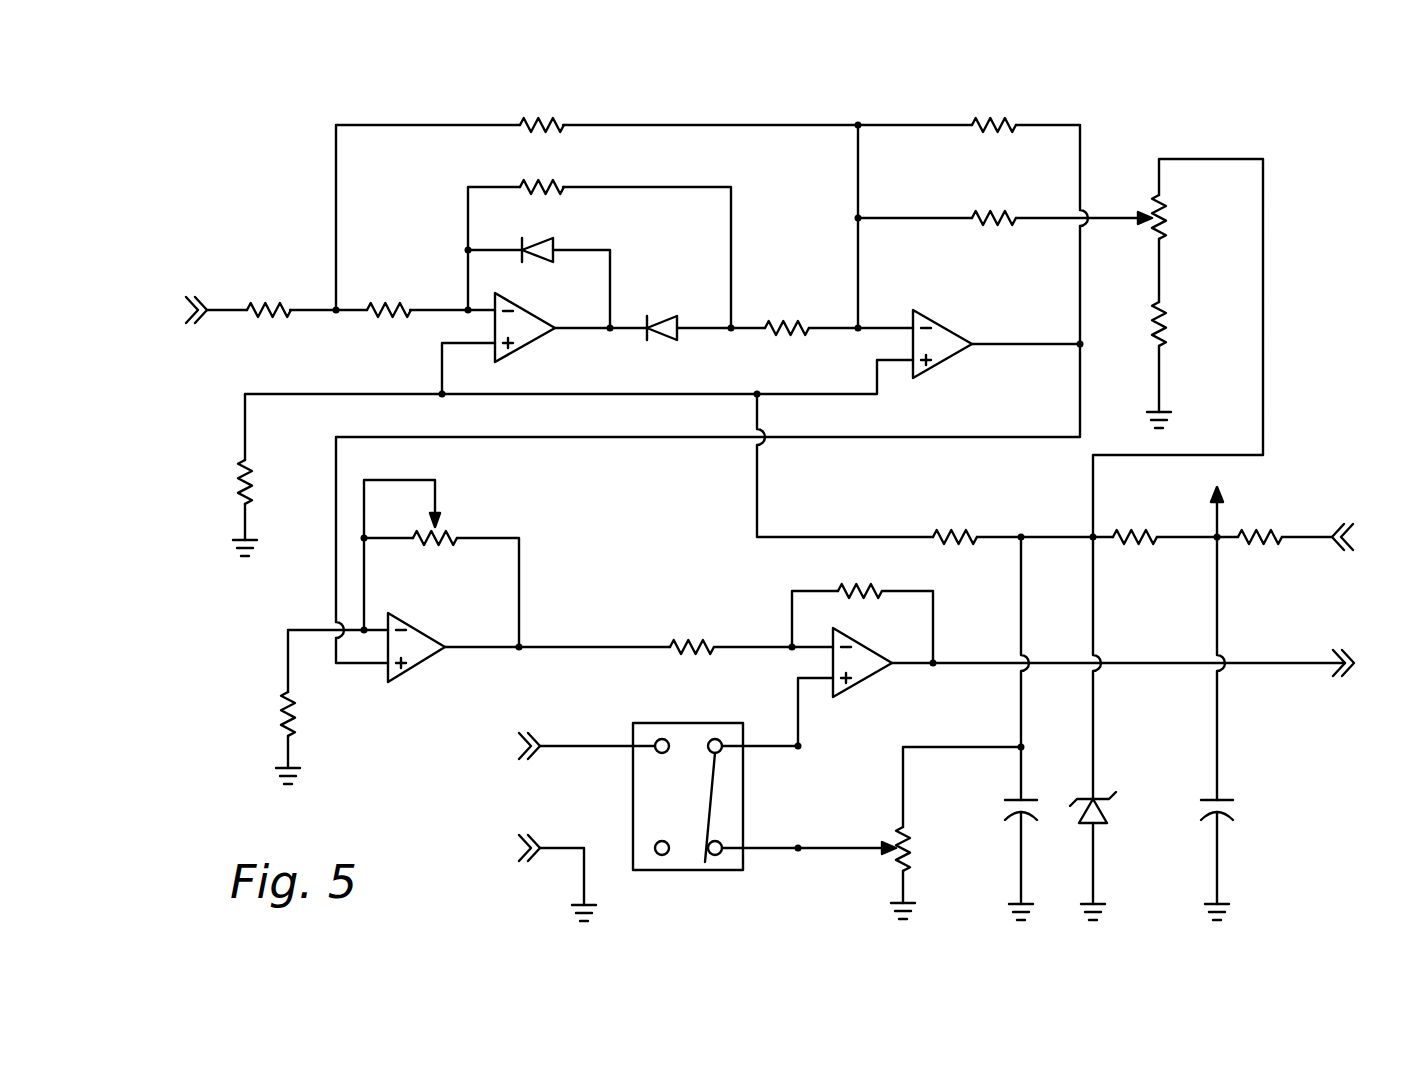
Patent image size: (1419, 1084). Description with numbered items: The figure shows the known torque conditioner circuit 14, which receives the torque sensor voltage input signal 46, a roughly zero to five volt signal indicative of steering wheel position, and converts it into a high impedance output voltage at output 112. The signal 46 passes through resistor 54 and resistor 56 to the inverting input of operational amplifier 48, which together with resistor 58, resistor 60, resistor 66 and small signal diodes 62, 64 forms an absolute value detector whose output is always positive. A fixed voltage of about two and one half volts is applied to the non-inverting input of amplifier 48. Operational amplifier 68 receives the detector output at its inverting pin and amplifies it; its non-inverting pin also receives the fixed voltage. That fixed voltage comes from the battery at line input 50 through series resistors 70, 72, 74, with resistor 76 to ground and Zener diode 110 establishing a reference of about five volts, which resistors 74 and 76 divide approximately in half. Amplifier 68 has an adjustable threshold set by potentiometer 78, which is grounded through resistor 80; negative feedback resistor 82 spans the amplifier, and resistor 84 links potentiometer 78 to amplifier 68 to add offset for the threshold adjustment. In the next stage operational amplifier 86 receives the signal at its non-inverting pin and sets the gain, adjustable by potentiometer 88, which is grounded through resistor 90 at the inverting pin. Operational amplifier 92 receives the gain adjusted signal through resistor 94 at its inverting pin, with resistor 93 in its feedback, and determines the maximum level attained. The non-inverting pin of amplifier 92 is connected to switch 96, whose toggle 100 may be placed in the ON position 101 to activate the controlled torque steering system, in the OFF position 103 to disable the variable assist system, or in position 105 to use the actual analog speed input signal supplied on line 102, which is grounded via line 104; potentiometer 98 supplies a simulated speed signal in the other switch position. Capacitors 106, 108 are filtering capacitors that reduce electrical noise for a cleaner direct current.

The torque conditioner circuit 14 is at (257, 197).
The voltage input signal 46 is at (208, 298).
The operational amplifier 48 is at (520, 308).
The line input 50 is at (1350, 535).
The resistor 54 is at (270, 300).
The resistor 56 is at (390, 300).
The resistor 58 is at (558, 182).
The resistor 60 is at (803, 320).
The small signal diode 62 is at (655, 318).
The small signal diode 64 is at (556, 245).
The resistor 66 is at (558, 120).
The operational amplifier 68 is at (940, 322).
The resistor 70 is at (1268, 531).
The resistor 72 is at (1142, 531).
The resistor 74 is at (962, 532).
The resistor 76 is at (258, 485).
The potentiometer 78 is at (1167, 220).
The resistor 80 is at (1167, 325).
The negative feedback resistor 82 is at (1012, 120).
The resistor 84 is at (1012, 214).
The operational amplifier 86 is at (416, 625).
The potentiometer 88 is at (452, 532).
The resistor 90 is at (297, 714).
The operational amplifier 92 is at (858, 644).
The resistor 93 is at (868, 588).
The resistor 94 is at (690, 642).
The switch 96 is at (700, 723).
The potentiometer 98 is at (915, 848).
The toggle 100 is at (712, 808).
The ON position 101 is at (733, 902).
The line 102 is at (548, 745).
The OFF position 103 is at (648, 904).
The line 104 is at (548, 847).
The position 105 is at (613, 720).
The capacitor 106 is at (1015, 798).
The capacitor 108 is at (1228, 798).
The Zener diode 110 is at (1103, 808).
The output 112 is at (1345, 660).